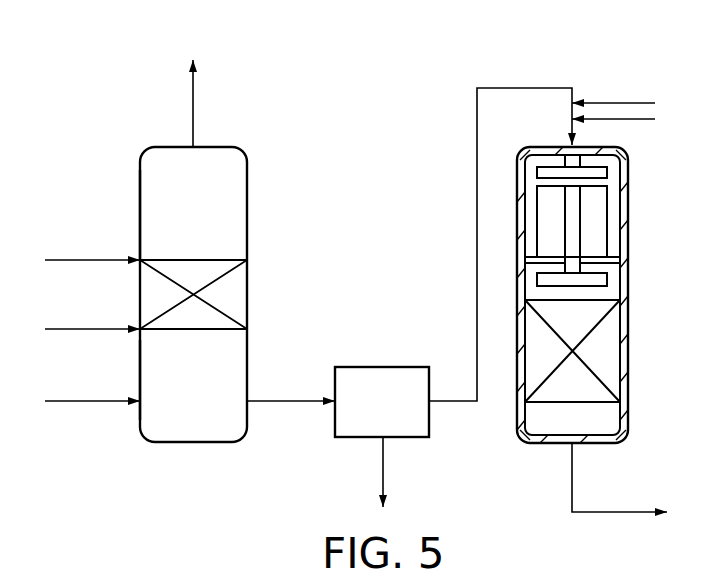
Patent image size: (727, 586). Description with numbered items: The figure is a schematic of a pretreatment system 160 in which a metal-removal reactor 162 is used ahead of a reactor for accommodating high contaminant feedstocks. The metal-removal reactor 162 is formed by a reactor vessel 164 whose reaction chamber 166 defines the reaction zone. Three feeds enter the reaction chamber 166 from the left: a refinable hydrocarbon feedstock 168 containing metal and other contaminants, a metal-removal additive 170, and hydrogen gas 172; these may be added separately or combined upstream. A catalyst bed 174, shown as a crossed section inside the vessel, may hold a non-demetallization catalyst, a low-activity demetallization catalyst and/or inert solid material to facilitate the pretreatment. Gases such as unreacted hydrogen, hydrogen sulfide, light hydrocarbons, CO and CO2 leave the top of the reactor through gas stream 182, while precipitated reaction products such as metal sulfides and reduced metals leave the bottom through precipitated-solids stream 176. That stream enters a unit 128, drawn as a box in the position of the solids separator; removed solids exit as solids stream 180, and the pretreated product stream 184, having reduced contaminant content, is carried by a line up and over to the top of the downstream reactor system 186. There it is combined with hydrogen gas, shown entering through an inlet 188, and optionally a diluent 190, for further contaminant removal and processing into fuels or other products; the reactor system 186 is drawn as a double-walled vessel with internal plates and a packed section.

The controller 128 is at (360, 413).
The system 160 is at (283, 247).
The metal-removal reactor 162 is at (252, 365).
The reactor vessel 164 is at (247, 205).
The reaction chamber 166 is at (148, 183).
The refinable hydrocarbon feedstock 168 is at (93, 331).
The metal-removal additive 170 is at (93, 403).
The hydrogen gas 172 is at (93, 259).
The catalyst bed 174 is at (237, 295).
The precipitated-solids stream 176 is at (290, 403).
The solids stream 180 is at (383, 466).
The gas stream 182 is at (193, 105).
The pretreated product stream 184 is at (525, 88).
The reactor system 186 is at (630, 269).
The inlet stream 188 is at (626, 102).
The diluent 190 is at (645, 121).